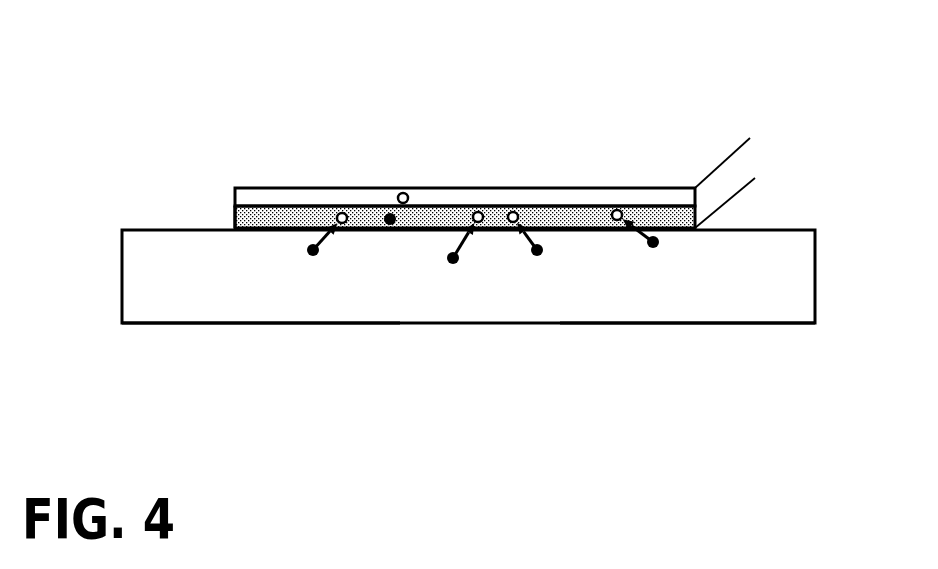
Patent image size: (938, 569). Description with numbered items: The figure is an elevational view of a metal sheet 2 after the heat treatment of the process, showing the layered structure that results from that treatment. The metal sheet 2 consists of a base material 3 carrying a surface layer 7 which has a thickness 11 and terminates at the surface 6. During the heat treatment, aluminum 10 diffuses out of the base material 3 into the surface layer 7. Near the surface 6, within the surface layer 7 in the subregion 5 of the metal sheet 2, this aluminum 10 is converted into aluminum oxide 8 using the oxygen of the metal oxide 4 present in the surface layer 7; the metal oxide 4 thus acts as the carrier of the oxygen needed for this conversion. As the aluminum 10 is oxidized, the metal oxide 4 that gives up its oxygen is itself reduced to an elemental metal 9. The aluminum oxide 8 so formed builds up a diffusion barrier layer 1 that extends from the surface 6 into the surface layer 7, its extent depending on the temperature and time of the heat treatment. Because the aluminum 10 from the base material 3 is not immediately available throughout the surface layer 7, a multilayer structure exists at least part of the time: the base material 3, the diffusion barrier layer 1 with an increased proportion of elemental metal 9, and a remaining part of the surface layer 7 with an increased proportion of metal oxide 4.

The diffusion barrier layer 1 is at (358, 215).
The metal sheet 2 is at (578, 305).
The base material 3 is at (337, 308).
The metal oxide 4 is at (405, 194).
The subregion 5 is at (248, 230).
The surface 6 is at (802, 232).
The surface layer 7 is at (622, 207).
The aluminum oxide 8 is at (617, 210).
The elemental metal 9 is at (390, 213).
The aluminum 10 is at (313, 250).
The thickness 11 is at (735, 193).